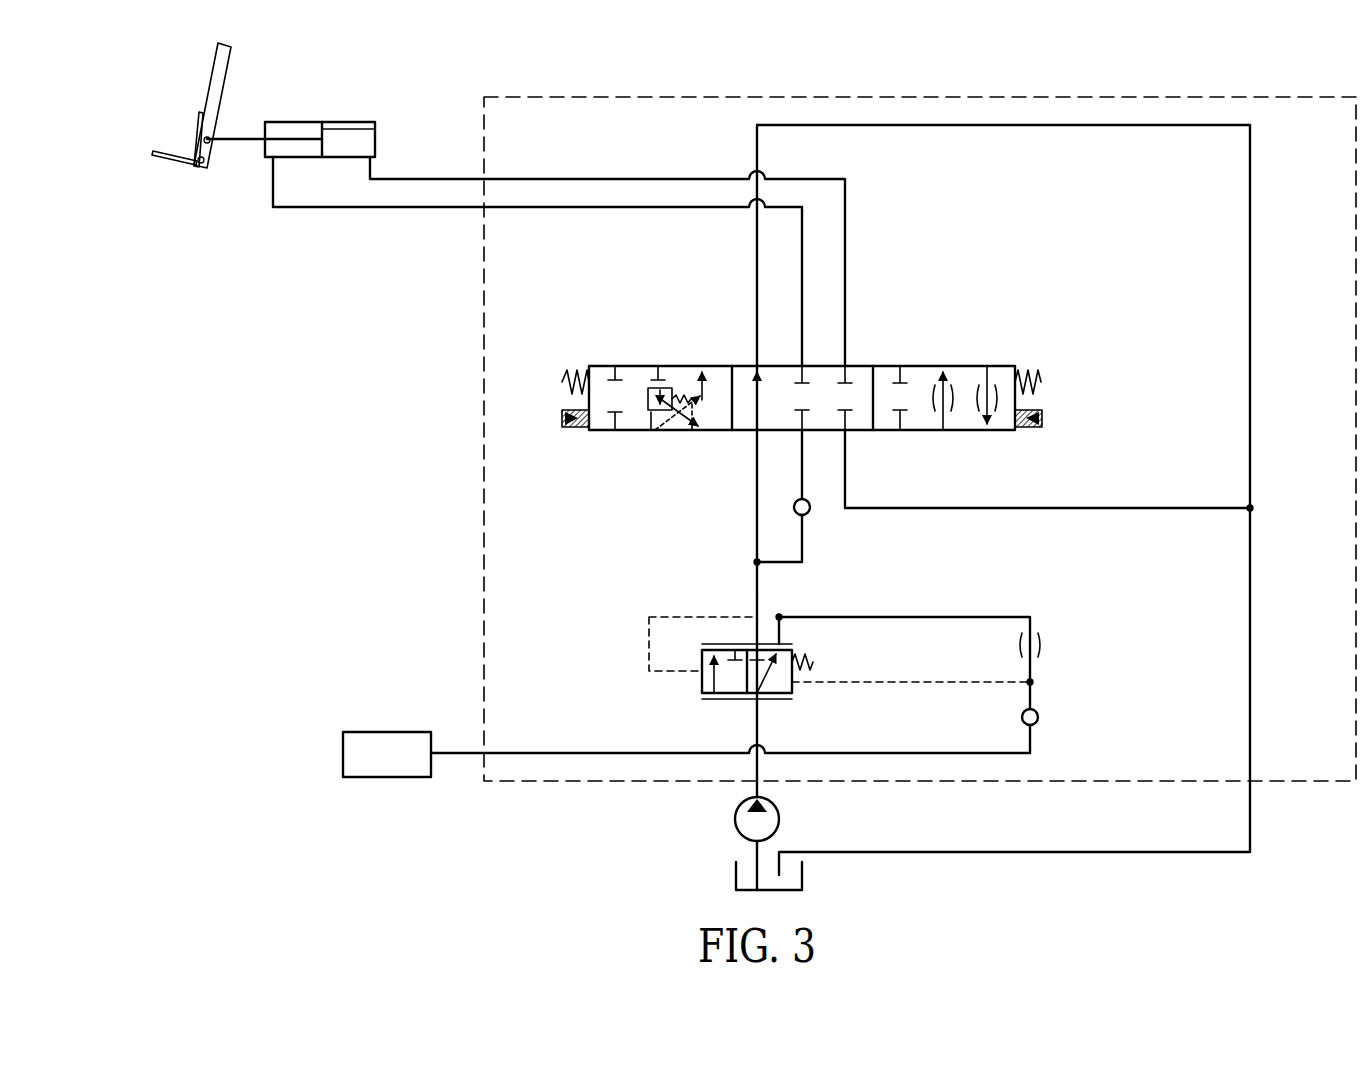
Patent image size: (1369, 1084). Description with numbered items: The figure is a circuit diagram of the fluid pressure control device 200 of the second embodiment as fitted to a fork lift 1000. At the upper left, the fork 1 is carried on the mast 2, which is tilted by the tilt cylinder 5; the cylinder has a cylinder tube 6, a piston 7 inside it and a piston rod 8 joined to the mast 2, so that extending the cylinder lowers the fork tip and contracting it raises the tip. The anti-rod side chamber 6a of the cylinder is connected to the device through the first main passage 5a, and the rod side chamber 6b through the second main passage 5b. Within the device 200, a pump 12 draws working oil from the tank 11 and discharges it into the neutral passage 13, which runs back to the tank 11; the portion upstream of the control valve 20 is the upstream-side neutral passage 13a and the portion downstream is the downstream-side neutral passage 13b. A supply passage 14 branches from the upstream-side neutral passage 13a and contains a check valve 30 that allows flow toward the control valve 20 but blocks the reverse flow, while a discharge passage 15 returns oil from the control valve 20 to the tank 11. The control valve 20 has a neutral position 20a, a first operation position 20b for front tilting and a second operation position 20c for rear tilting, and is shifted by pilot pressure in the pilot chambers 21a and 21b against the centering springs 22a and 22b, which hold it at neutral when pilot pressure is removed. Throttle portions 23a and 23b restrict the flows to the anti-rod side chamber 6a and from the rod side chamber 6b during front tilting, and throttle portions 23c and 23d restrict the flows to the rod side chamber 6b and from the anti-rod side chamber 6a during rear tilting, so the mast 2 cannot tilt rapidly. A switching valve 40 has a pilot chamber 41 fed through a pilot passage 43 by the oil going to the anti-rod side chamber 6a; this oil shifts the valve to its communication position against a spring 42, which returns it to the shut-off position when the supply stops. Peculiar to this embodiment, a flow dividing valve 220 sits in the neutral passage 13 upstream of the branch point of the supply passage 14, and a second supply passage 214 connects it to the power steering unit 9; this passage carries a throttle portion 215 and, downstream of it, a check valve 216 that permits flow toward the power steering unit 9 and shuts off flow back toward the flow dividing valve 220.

The fork 1 is at (174, 165).
The mast 2 is at (215, 82).
The tilt cylinder 5 is at (378, 120).
The first main passage 5a is at (452, 178).
The second main passage 5b is at (452, 209).
The cylinder tube 6 is at (348, 122).
The anti-rod side chamber 6a is at (355, 150).
The rod side chamber 6b is at (307, 150).
The piston 7 is at (350, 130).
The piston rod 8 is at (240, 130).
The power steering unit 9 is at (395, 732).
The tank 11 is at (735, 872).
The pump 12 is at (735, 818).
The neutral passage 13 is at (692, 507).
The upstream-side neutral passage 13a is at (756, 596).
The downstream-side neutral passage 13b is at (756, 248).
The supply passage 14 is at (805, 548).
The discharge passage 15 is at (1080, 510).
The control valve 20 is at (1016, 366).
The neutral position 20a is at (872, 366).
The first operation position 20b is at (728, 366).
The second operation position 20c is at (1013, 366).
The pilot chamber 21a is at (575, 430).
The pilot chamber 21b is at (1028, 430).
The centering spring 22a is at (572, 366).
The centering spring 22b is at (1040, 385).
The throttle portion 23a is at (698, 372).
The throttle portion 23b is at (655, 375).
The throttle portion 23c is at (940, 372).
The throttle portion 23d is at (985, 372).
The check valve 30 is at (812, 505).
The switching valve 40 is at (648, 392).
The pilot chamber 41 is at (677, 432).
The spring 42 is at (650, 432).
The pilot passage 43 is at (690, 432).
The fluid pressure control device 200 is at (484, 372).
The supply passage 214 is at (960, 616).
The throttle portion 215 is at (1042, 645).
The check valve 216 is at (1040, 717).
The flow dividing valve 220 is at (790, 646).
The fork lift 1000 is at (158, 780).